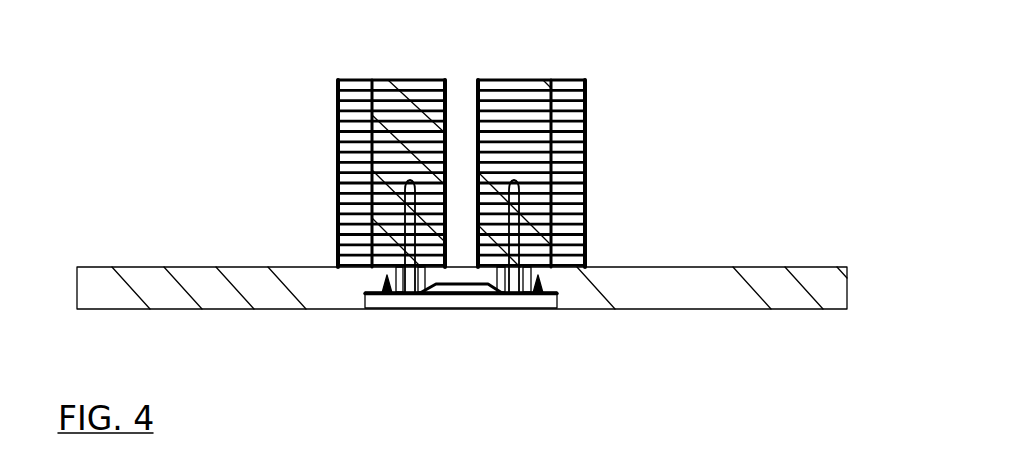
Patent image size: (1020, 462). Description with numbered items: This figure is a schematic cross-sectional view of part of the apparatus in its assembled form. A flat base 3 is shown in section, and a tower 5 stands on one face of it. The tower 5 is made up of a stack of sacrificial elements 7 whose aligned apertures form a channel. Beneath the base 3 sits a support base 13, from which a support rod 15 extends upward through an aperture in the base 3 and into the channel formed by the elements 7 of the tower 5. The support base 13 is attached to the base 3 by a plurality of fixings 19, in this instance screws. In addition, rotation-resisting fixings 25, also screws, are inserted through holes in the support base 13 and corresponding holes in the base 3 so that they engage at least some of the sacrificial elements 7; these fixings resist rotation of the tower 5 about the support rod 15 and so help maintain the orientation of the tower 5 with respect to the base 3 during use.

The base 3 is at (687, 282).
The tower 5 is at (620, 115).
The sacrificial elements 7 is at (360, 148).
The support base 13 is at (466, 279).
The support rod 15 is at (460, 143).
The fixings 19 is at (382, 280).
The rotation-resisting fixings 25 is at (515, 286).